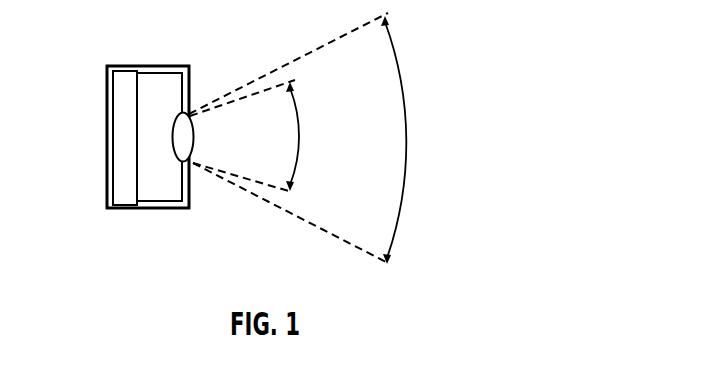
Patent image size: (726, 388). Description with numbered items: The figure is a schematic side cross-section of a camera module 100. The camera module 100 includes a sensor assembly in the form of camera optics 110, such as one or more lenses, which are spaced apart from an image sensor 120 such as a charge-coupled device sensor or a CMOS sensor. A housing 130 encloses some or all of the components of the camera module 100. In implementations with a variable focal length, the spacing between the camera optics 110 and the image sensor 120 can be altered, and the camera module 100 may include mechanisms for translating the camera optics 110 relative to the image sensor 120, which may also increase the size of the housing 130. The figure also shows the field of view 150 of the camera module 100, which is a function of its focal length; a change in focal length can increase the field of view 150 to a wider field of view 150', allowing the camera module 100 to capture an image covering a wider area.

The camera module 100 is at (171, 45).
The camera optics 110 is at (194, 133).
The image sensor 120 is at (120, 193).
The housing 130 is at (118, 64).
The field of view 150 is at (285, 136).
The wider field of view 150' is at (340, 138).